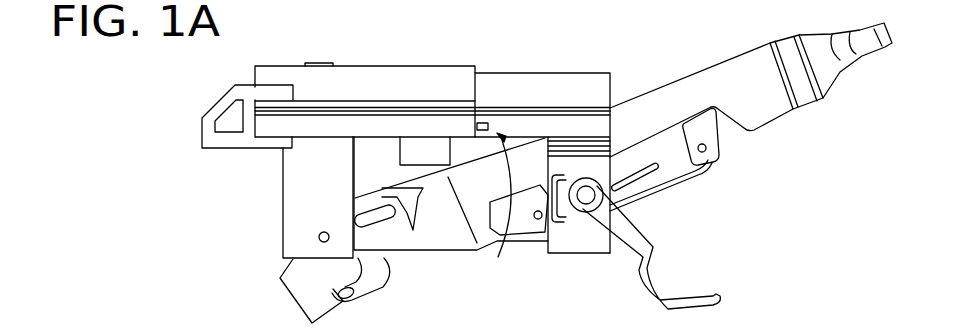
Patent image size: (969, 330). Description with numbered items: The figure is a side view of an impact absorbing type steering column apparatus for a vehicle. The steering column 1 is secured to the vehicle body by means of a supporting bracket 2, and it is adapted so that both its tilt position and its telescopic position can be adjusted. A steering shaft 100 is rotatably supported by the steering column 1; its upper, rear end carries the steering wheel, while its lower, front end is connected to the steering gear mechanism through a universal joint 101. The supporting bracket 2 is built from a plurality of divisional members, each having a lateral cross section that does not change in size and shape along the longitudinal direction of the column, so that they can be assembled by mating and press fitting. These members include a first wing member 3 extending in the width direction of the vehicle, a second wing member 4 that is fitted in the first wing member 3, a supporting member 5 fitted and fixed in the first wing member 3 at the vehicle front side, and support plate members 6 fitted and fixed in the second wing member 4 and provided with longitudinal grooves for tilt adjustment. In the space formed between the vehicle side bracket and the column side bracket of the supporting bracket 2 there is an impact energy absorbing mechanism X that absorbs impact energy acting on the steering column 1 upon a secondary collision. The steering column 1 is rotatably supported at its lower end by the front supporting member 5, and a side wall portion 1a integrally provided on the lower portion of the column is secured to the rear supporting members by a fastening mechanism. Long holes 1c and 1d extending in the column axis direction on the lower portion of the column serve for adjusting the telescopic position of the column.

The steering column 1 is at (646, 92).
The side wall portion 1a is at (703, 180).
The long hole 1c is at (678, 158).
The long hole 1d is at (382, 198).
The supporting bracket 2 is at (321, 56).
The first wing member 3 is at (362, 66).
The second wing member 4 is at (535, 73).
The supporting member 5 is at (283, 212).
The support plate member 6 is at (580, 254).
The steering shaft 100 is at (838, 72).
The universal joint 101 is at (377, 278).
The impact energy absorbing mechanism X is at (500, 208).